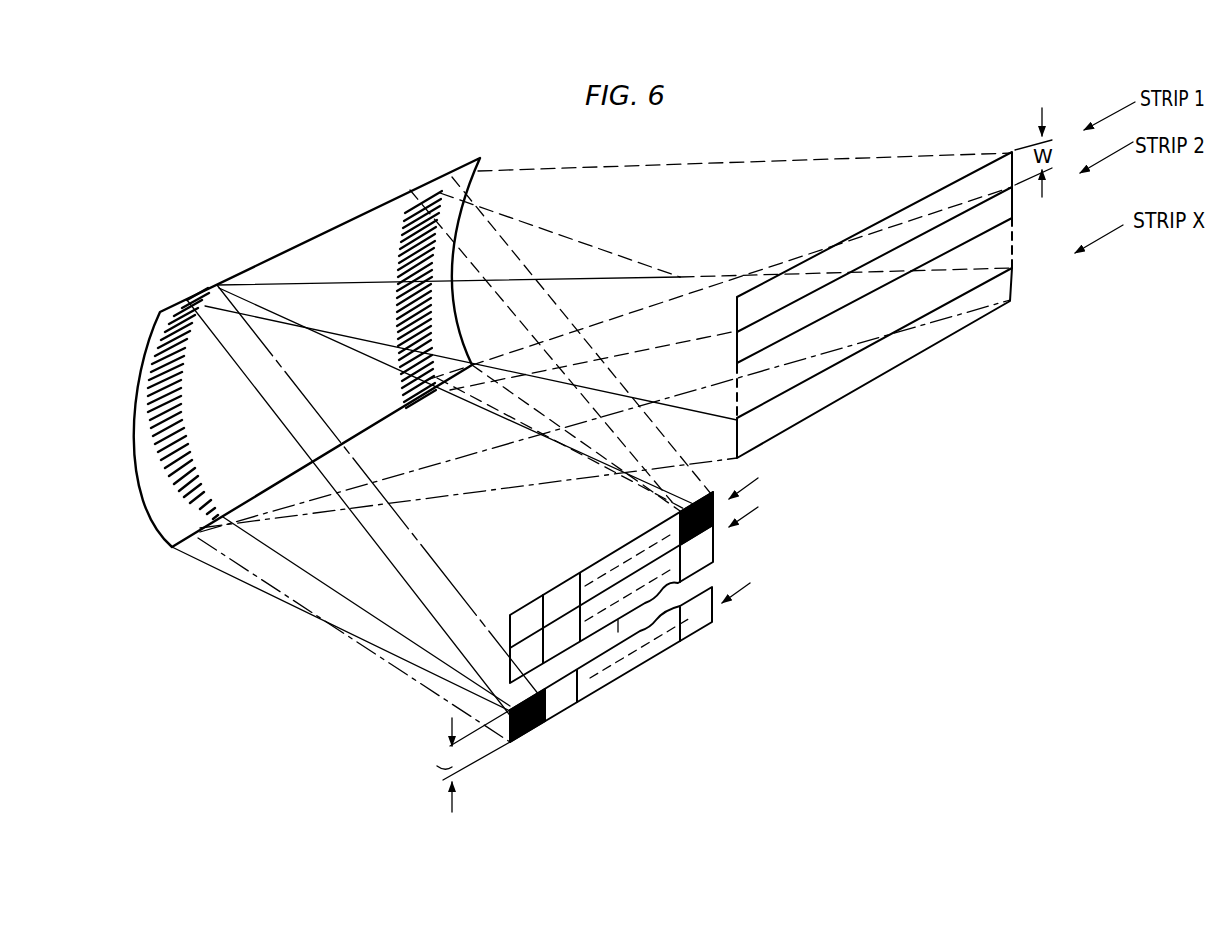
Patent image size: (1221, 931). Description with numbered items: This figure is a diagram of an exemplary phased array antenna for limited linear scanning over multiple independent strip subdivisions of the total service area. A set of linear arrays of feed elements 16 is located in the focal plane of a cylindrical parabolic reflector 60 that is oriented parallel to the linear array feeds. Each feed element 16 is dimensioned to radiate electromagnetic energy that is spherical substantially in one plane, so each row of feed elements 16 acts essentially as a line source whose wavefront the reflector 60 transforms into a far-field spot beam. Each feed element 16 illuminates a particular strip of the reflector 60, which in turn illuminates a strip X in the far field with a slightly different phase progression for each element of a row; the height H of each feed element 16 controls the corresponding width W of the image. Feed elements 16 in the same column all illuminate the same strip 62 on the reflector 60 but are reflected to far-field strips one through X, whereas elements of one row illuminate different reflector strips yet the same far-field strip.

The cylindrical parabolic reflector 60 is at (217, 284).
The strip on reflector 62 is at (160, 438).
The feed elements 16 is at (702, 501).